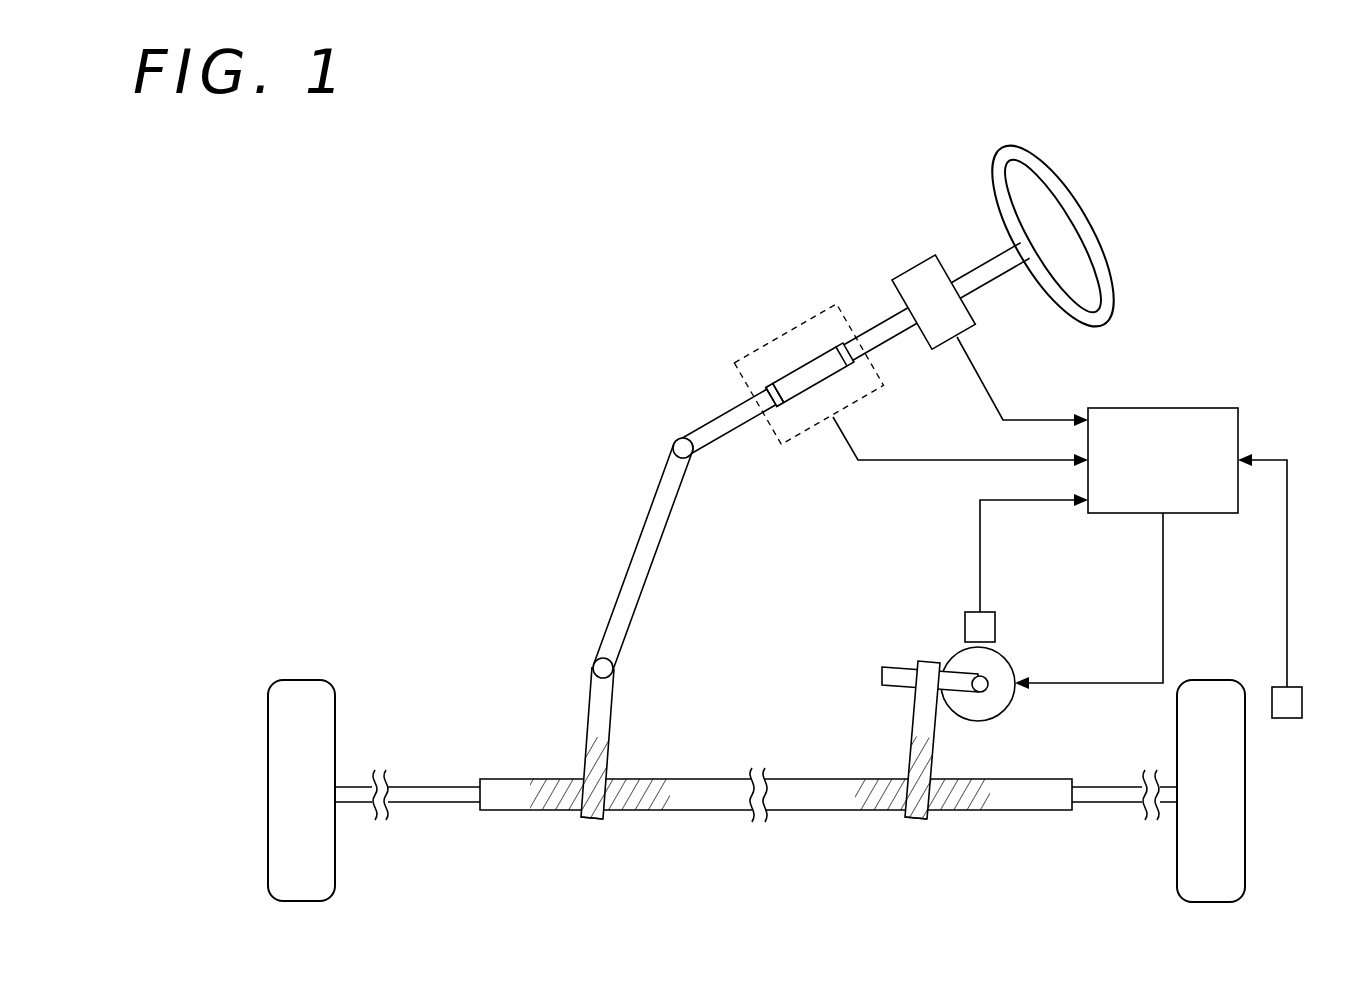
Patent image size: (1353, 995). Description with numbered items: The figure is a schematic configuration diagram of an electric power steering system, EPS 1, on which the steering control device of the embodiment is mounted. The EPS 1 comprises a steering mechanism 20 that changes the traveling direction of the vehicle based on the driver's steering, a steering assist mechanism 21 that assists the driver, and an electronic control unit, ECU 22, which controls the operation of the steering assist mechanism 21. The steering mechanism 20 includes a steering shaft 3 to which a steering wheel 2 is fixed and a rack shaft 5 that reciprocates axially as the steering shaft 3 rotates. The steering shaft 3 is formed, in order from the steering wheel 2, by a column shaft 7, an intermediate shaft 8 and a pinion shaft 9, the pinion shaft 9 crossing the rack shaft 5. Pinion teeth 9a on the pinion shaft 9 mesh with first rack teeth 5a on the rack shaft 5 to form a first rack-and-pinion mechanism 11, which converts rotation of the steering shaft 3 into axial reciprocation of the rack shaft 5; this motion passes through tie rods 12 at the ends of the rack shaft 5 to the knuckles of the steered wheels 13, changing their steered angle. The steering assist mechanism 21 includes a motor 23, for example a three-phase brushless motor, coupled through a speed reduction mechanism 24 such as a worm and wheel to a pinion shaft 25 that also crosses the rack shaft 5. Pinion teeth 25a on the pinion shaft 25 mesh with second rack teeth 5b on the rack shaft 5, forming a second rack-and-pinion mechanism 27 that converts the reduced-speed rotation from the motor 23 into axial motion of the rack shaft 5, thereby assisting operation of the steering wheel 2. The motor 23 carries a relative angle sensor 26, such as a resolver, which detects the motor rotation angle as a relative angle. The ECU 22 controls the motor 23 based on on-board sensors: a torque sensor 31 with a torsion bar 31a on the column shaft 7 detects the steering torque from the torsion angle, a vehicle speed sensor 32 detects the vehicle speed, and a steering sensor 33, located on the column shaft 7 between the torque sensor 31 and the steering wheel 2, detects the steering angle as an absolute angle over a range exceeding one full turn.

The electric power steering system (EPS) 1 is at (633, 219).
The steering wheel 2 is at (1050, 175).
The steering shaft 3 is at (548, 440).
The rack shaft 5 is at (776, 794).
The first rack teeth 5a is at (622, 811).
The second rack teeth 5b is at (947, 811).
The column shaft 7 is at (702, 428).
The intermediate shaft 8 is at (633, 583).
The pinion shaft 9 is at (572, 743).
The pinion teeth 9a is at (588, 759).
The first rack-and-pinion mechanism 11 is at (568, 836).
The tie rods 12 is at (403, 803).
The steered wheels 13 is at (298, 901).
The steering mechanism 20 is at (675, 677).
The steering assist mechanism 21 is at (860, 632).
The electronic control unit (ECU) 22 is at (1198, 408).
The motor 23 is at (991, 707).
The speed reduction mechanism 24 is at (957, 672).
The pinion shaft 25 is at (887, 740).
The pinion teeth 25a is at (913, 758).
The relative angle sensor 26 is at (1000, 627).
The second rack-and-pinion mechanism 27 is at (893, 836).
The torque sensor 31 is at (820, 313).
The torsion bar 31a is at (787, 382).
The vehicle speed sensor 32 is at (1285, 720).
The steering sensor 33 is at (915, 270).